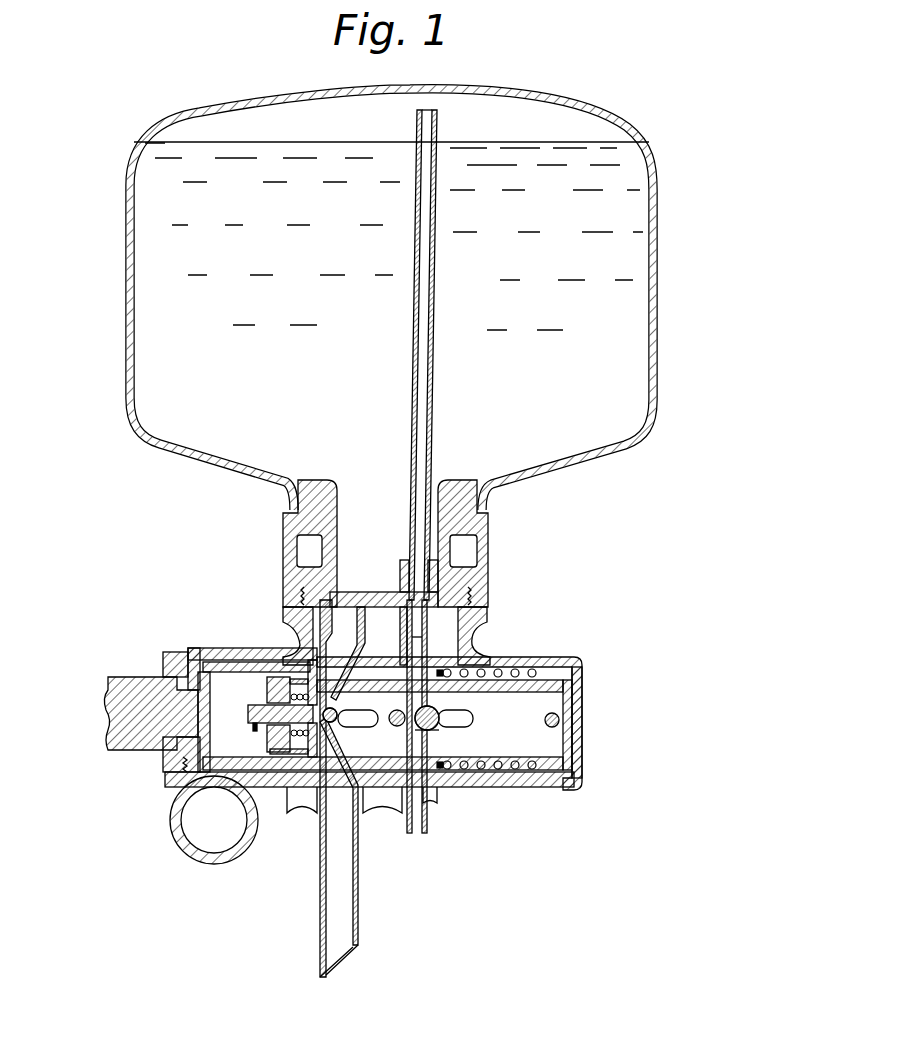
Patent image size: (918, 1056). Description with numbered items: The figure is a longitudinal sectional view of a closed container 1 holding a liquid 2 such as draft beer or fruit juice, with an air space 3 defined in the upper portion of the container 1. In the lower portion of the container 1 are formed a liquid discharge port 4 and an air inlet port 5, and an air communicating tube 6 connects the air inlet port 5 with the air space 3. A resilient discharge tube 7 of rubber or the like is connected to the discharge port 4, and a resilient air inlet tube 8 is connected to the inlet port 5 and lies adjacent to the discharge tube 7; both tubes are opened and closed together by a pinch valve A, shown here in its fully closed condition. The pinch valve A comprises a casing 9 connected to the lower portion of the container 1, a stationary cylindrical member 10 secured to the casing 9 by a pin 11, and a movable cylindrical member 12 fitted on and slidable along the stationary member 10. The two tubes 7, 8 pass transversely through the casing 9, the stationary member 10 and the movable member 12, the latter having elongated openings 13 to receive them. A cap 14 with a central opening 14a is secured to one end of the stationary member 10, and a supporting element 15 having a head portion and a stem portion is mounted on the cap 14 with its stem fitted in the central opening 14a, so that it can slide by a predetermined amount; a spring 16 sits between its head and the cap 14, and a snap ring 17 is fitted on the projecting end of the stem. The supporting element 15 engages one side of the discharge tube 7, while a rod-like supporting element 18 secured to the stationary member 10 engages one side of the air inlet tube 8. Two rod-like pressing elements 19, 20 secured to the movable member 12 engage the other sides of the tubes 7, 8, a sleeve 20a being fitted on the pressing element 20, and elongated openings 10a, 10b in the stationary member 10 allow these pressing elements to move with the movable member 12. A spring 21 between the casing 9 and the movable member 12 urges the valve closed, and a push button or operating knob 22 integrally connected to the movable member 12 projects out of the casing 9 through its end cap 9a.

The closed container 1 is at (653, 250).
The liquid 2 is at (623, 183).
The air space 3 is at (562, 128).
The liquid discharge port 4 is at (283, 595).
The air inlet port 5 is at (468, 630).
The air communicating tube 6 is at (430, 397).
The resilient discharge tube 7 is at (318, 640).
The resilient air inlet tube 8 is at (428, 810).
The casing 9 is at (506, 788).
The end cap 9a is at (162, 652).
The stationary cylindrical member 10 is at (528, 684).
The elongated opening 10a is at (349, 800).
The elongated opening 10b is at (474, 721).
The pin 11 is at (565, 733).
The movable cylindrical member 12 is at (190, 787).
The elongated openings 13 is at (290, 768).
The cap 14 is at (222, 648).
The central opening 14a is at (210, 752).
The supporting element 15 is at (310, 768).
The spring 16 is at (290, 676).
The snap ring 17 is at (258, 702).
The rod-like supporting element 18 is at (397, 727).
The pressing element 19 is at (338, 710).
The pressing element 20 is at (438, 708).
The sleeve 20a is at (440, 730).
The spring 21 is at (533, 770).
The push button or operating knob 22 is at (114, 713).
The pinch valve A is at (168, 646).